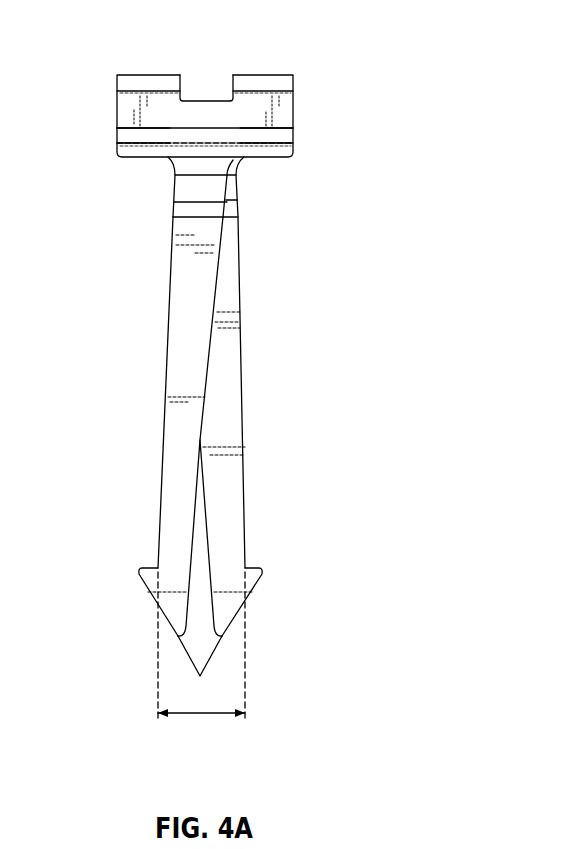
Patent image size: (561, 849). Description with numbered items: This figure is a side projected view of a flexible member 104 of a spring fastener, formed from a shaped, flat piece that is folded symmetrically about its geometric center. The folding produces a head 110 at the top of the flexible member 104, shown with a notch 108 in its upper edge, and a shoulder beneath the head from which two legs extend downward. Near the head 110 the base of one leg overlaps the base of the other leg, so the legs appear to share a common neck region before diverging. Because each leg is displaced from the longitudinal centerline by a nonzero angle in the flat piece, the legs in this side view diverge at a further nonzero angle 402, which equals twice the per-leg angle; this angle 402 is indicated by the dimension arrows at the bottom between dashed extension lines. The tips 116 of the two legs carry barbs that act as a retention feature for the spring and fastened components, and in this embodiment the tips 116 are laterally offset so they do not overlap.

The flexible member 104 is at (332, 238).
The notch in head 108 is at (200, 98).
The head 110 is at (296, 114).
The tips 116 is at (200, 673).
The further nonzero angle 402 is at (202, 717).